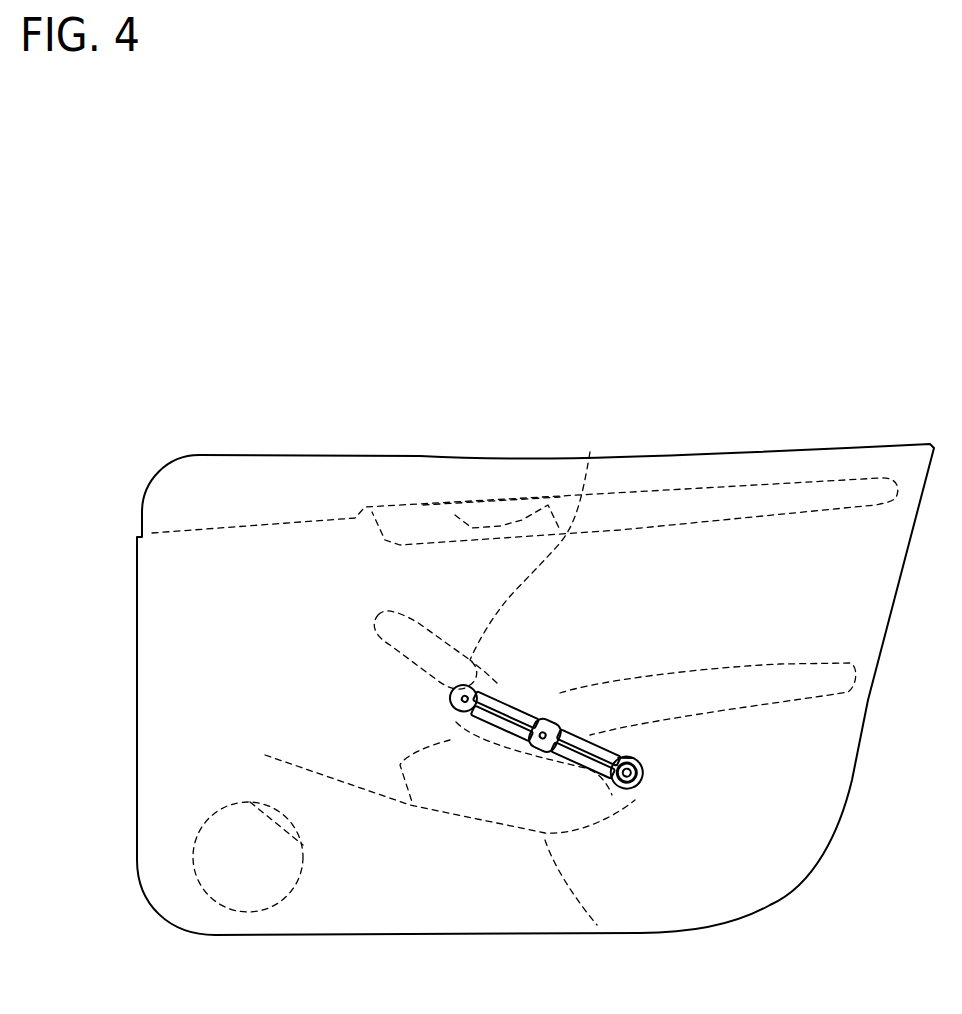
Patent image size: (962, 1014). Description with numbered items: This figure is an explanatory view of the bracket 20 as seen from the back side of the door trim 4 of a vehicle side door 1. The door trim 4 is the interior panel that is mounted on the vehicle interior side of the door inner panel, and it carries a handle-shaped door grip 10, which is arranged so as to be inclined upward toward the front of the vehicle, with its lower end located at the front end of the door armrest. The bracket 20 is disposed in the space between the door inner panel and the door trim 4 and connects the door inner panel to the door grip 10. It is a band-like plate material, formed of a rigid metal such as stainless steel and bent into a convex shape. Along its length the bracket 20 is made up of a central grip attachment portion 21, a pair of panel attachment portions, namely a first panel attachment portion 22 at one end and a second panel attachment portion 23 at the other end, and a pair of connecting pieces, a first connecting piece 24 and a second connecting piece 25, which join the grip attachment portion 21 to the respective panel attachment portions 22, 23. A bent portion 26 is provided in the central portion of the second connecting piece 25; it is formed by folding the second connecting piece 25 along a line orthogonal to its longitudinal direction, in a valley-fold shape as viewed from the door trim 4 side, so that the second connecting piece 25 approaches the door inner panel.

The side door 1 is at (317, 453).
The door trim 4 is at (423, 505).
The door grip 10 is at (539, 542).
The bracket 20 is at (605, 716).
The grip attachment portion 21 is at (545, 748).
The first panel attachment portion 22 is at (458, 715).
The second panel attachment portion 23 is at (637, 787).
The first connecting piece 24 is at (514, 705).
The second connecting piece 25 is at (576, 772).
The bent portion 26 is at (578, 720).